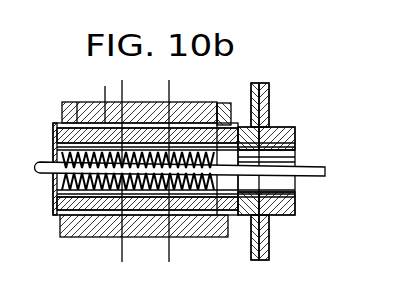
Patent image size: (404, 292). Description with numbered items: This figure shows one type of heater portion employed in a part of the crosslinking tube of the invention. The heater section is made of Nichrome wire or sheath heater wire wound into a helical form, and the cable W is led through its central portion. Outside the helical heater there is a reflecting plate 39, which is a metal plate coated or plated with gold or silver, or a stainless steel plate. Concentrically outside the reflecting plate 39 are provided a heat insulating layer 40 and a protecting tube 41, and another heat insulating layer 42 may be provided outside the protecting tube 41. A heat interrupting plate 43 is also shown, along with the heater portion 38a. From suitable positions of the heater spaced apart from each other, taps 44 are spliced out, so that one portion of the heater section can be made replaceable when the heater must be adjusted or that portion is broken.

The lower housing block 38a is at (53, 206).
The reflecting plate 39 is at (53, 181).
The heat insulating layer 40 is at (120, 123).
The protecting tube 41 is at (105, 92).
The heat insulating layer 42 is at (217, 103).
The heat interrupting plate 43 is at (53, 134).
The taps 44 is at (169, 86).
The cable W is at (312, 167).